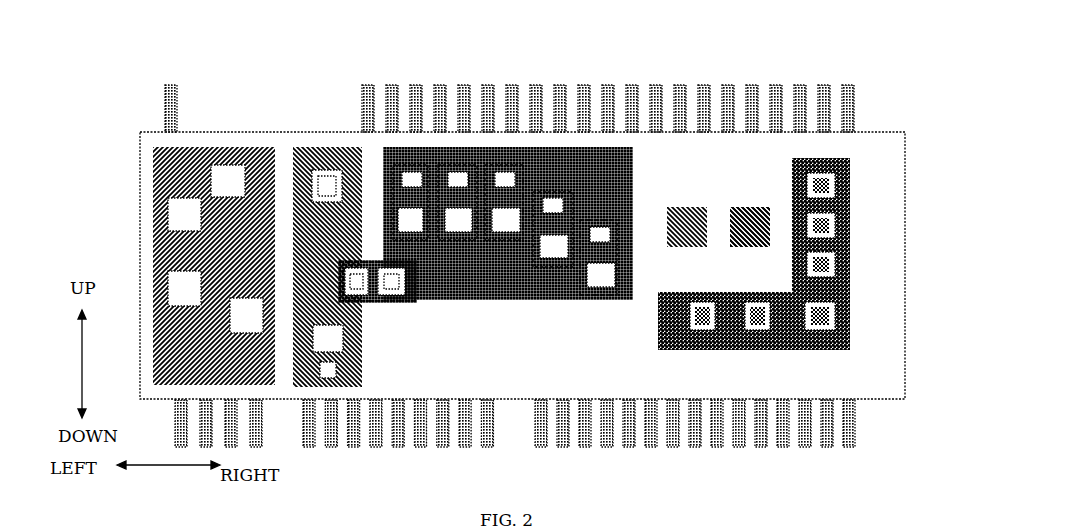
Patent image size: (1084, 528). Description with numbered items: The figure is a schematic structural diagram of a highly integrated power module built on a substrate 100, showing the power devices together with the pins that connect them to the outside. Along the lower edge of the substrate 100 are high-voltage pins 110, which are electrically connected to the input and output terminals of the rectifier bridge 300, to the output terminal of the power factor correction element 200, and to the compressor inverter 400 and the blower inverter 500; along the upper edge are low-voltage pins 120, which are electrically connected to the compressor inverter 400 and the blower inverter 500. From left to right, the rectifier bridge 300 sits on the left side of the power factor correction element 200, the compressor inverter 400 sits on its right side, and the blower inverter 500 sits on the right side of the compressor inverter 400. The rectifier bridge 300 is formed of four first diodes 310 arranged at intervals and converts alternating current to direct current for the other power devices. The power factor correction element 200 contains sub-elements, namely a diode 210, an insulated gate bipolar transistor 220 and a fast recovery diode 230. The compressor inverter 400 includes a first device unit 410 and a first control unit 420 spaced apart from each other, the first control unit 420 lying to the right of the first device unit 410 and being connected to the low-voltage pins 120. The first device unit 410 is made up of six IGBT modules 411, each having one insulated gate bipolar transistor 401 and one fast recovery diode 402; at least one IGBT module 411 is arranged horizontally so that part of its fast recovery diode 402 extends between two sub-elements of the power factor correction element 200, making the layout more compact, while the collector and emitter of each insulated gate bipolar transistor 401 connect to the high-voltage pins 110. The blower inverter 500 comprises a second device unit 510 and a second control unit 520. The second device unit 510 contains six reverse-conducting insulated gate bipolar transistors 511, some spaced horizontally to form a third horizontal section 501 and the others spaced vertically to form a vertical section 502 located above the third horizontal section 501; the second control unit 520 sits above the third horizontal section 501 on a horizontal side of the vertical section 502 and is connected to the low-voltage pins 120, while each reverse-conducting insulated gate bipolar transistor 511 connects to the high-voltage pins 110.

The substrate 100 is at (140, 232).
The high-voltage pins 110 is at (857, 428).
The low-voltage pins 120 is at (857, 100).
The power factor correction element 200 is at (313, 147).
The diode 210 is at (333, 148).
The insulated gate bipolar transistor 220 is at (362, 370).
The fast recovery diode 230 is at (362, 388).
The rectifier bridge 300 is at (243, 147).
The first diodes 310 is at (278, 378).
The compressor inverter 400 is at (554, 177).
The insulated gate bipolar transistor 401 is at (400, 300).
The fast recovery diode 402 is at (360, 303).
The first device unit 410 is at (612, 147).
The IGBT modules 411 is at (463, 148).
The first control unit 420 is at (682, 207).
The blower inverter 500 is at (778, 201).
The third horizontal section 501 is at (848, 355).
The vertical section 502 is at (858, 160).
The second device unit 510 is at (822, 158).
The reverse-conducting insulated gate bipolar transistors 511 is at (792, 268).
The second control unit 520 is at (752, 207).